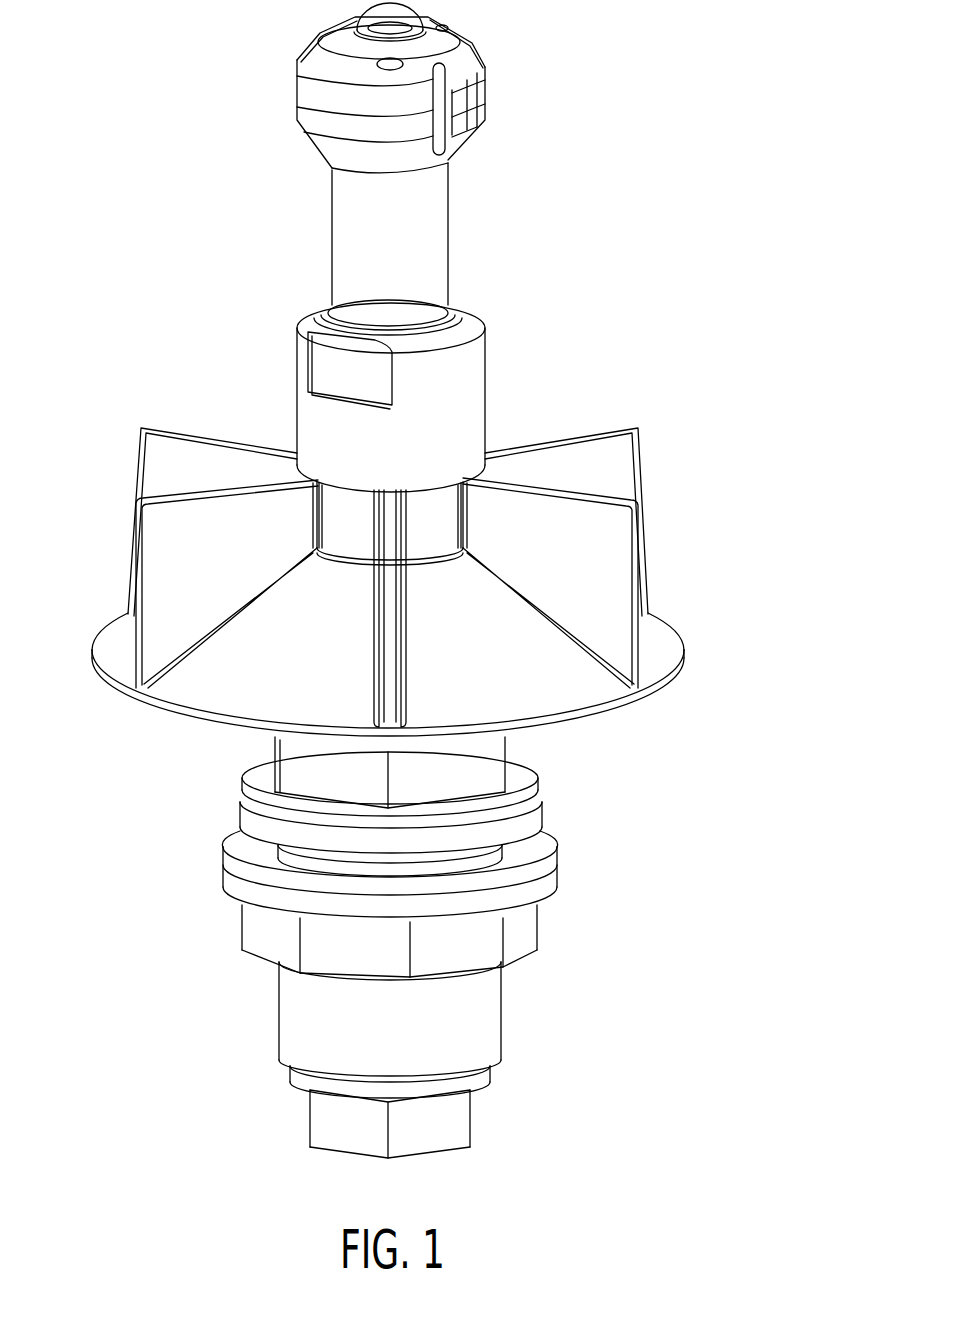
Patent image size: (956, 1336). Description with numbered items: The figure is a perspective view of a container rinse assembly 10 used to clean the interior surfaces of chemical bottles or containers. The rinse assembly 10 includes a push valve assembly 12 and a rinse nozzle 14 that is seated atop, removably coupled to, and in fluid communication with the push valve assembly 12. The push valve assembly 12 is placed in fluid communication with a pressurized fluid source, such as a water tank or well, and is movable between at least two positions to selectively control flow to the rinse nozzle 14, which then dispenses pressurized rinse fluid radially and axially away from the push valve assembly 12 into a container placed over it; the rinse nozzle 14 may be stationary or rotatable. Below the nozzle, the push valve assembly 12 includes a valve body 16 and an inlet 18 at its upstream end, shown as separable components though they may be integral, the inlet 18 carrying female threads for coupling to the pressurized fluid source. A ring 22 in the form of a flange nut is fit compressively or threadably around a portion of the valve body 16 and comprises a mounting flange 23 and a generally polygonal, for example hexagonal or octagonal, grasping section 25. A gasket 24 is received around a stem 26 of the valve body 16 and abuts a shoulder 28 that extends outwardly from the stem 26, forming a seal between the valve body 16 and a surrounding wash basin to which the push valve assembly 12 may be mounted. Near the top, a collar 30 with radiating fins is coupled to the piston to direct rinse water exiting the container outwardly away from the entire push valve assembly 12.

The container rinse assembly 10 is at (592, 82).
The push valve assembly 12 is at (696, 614).
The rinse nozzle 14 is at (298, 76).
The valve body 16 is at (490, 1018).
The inlet 18 is at (455, 1125).
The ring 22 is at (260, 918).
The mounting flange 23 is at (245, 850).
The gasket 24 is at (535, 822).
The grasping section 25 is at (520, 938).
The stem 26 is at (483, 862).
The shoulder 28 is at (525, 798).
The collar 30 is at (205, 695).